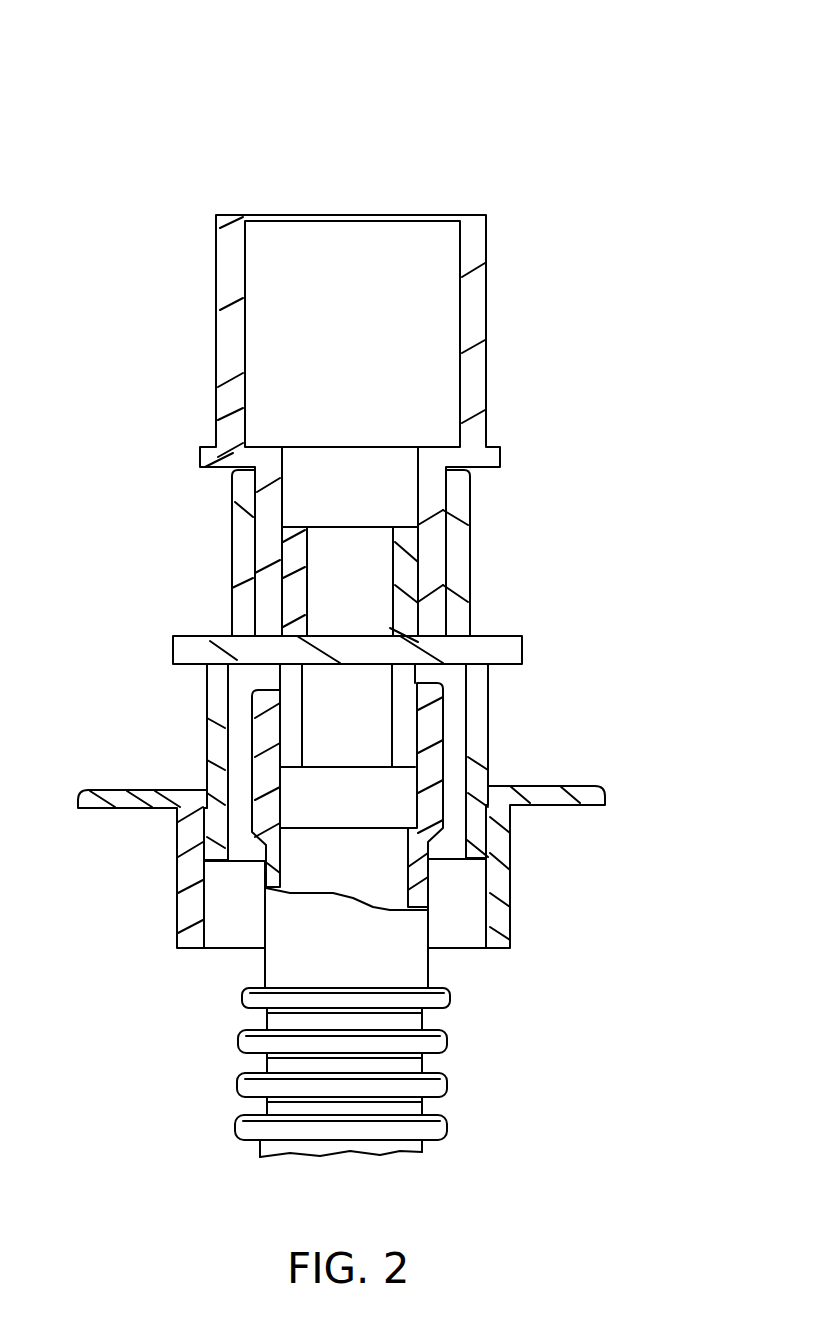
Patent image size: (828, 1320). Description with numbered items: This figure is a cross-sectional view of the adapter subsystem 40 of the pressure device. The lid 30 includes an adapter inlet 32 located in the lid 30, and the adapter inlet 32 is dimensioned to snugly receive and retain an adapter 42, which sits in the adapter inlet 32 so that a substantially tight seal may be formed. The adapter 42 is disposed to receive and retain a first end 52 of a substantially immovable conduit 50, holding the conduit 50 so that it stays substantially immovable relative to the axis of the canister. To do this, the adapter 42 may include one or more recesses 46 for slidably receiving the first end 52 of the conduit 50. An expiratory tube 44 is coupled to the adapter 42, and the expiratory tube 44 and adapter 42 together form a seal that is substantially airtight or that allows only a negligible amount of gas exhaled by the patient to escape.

The adapter subsystem 40 is at (390, 42).
The expiratory tube 44 is at (486, 280).
The adapter 42 is at (522, 650).
The recesses 46 is at (447, 677).
The first end 52 is at (407, 717).
The lid 30 is at (510, 857).
The adapter inlet 32 is at (457, 923).
The substantially immovable conduit 50 is at (447, 1040).